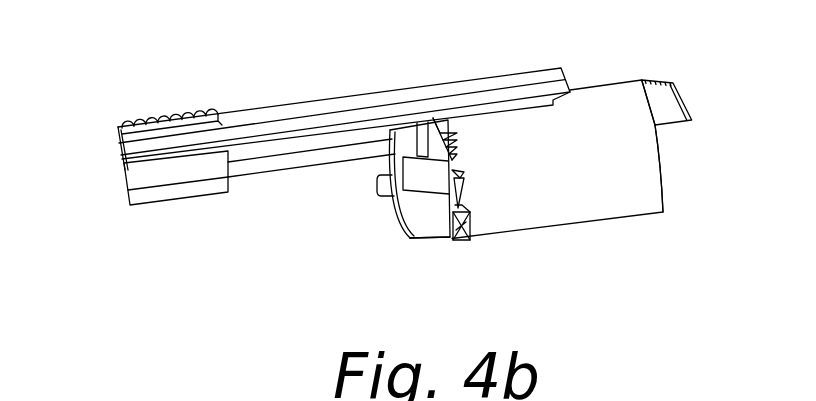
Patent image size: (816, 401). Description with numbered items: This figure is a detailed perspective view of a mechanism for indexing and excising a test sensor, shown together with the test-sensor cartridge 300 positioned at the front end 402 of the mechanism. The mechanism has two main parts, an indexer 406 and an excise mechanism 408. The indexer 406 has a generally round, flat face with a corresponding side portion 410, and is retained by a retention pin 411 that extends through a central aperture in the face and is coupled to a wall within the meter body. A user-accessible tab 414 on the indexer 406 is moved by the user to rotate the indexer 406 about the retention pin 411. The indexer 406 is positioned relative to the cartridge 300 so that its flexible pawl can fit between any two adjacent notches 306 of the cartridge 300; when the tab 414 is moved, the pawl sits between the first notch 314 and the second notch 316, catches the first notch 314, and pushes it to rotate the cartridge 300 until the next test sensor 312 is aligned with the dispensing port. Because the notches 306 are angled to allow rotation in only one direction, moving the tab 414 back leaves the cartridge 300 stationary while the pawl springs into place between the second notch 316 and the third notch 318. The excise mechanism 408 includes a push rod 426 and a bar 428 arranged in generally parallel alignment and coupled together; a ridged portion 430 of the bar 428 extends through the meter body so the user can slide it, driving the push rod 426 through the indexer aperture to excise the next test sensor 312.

The test-sensor cartridge 300 is at (597, 241).
The notches 306 is at (468, 232).
The next test sensor 312 is at (670, 99).
The first notch 314 is at (445, 129).
The second notch 316 is at (460, 177).
The third notch 318 is at (464, 240).
The front end 402 is at (680, 158).
The indexer 406 is at (431, 243).
The excise mechanism 408 is at (295, 98).
The side portion 410 is at (406, 222).
The retention pin 411 is at (380, 186).
The user-accessible tab 414 is at (437, 164).
The push rod 426 is at (282, 166).
The bar 428 is at (119, 140).
The ridged portion 430 is at (156, 120).